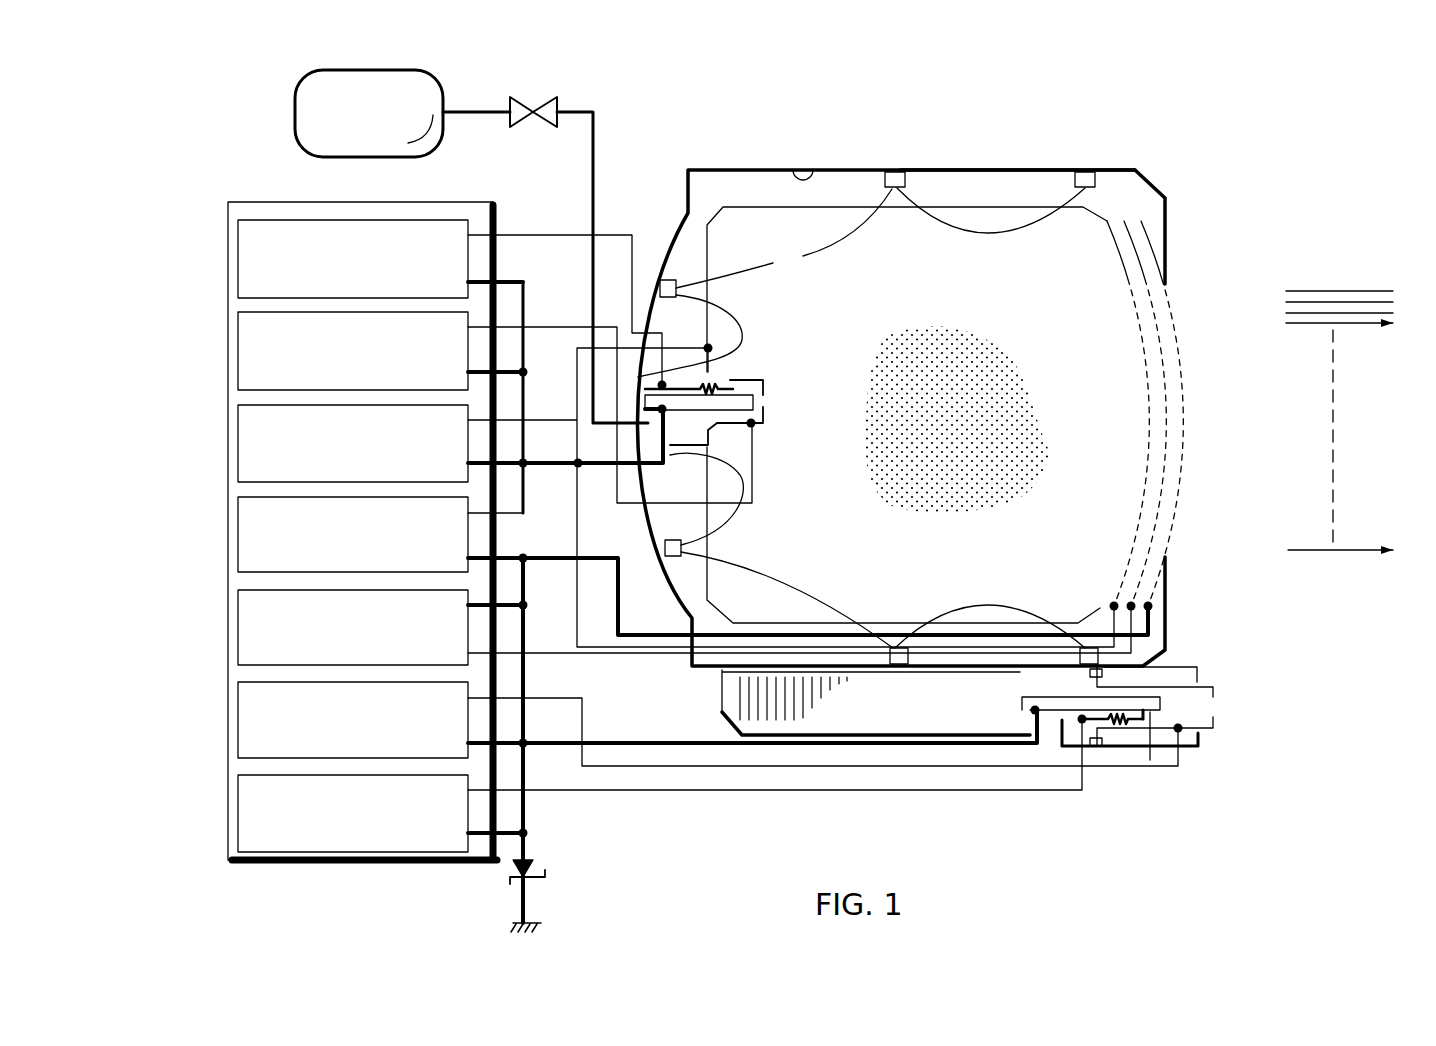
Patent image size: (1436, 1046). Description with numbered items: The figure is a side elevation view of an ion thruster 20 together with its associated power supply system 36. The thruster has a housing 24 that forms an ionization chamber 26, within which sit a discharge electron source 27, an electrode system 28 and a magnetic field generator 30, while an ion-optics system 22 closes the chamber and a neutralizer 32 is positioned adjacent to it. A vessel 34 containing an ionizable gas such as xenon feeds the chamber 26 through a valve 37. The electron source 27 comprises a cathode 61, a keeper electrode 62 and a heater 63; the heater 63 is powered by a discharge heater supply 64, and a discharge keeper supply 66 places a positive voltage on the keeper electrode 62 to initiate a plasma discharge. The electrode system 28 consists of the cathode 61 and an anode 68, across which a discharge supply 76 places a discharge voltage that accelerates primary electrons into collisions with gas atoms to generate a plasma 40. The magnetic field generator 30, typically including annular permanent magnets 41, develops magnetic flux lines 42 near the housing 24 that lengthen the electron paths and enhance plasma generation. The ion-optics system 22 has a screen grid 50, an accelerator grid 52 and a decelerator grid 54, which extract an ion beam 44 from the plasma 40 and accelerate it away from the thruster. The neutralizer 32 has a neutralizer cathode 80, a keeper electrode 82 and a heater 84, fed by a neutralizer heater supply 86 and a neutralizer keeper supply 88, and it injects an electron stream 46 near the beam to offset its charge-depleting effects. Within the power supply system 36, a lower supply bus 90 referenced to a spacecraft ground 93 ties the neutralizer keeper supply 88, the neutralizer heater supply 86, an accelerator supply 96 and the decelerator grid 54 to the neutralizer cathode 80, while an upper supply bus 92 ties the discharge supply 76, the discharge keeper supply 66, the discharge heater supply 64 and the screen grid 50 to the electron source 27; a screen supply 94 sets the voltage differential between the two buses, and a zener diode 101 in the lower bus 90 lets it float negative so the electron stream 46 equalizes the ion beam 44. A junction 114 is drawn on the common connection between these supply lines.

The ion thruster 20 is at (1236, 172).
The ion-optics system 22 is at (1218, 399).
The housing 24 is at (1042, 166).
The ionization chamber 26 is at (813, 171).
The discharge electron source 27 is at (747, 386).
The electrode system 28 is at (960, 203).
The magnetic field generator 30 is at (1102, 174).
The neutralizer 32 is at (1198, 658).
The vessel 34 is at (450, 88).
The power supply system 36 is at (246, 197).
The valve 37 is at (548, 98).
The plasma 40 is at (958, 428).
The annular permanent magnets 41 is at (906, 180).
The magnetic flux lines 42 is at (765, 418).
The ion beam 44 is at (1350, 552).
The electron stream 46 is at (1318, 707).
The screen grid 50 is at (1146, 401).
The accelerator grid 52 is at (1162, 368).
The decelerator grid 54 is at (1176, 333).
The cathode 61 is at (745, 432).
The keeper electrode 62 is at (766, 387).
The heater 63 is at (718, 384).
The discharge heater supply 64 is at (232, 249).
The discharge keeper supply 66 is at (232, 347).
The anode 68 is at (900, 208).
The discharge supply 76 is at (232, 444).
The neutralizer cathode 80 is at (1152, 712).
The keeper electrode 82 is at (1207, 728).
The heater 84 is at (1113, 722).
The neutralizer heater supply 86 is at (232, 794).
The neutralizer keeper supply 88 is at (232, 704).
The lower supply bus 90 is at (530, 809).
The upper supply bus 92 is at (516, 274).
The spacecraft ground 93 is at (538, 923).
The screen supply 94 is at (232, 529).
The accelerator supply 96 is at (232, 619).
The zener diode 101 is at (548, 870).
The junction 114 is at (625, 448).